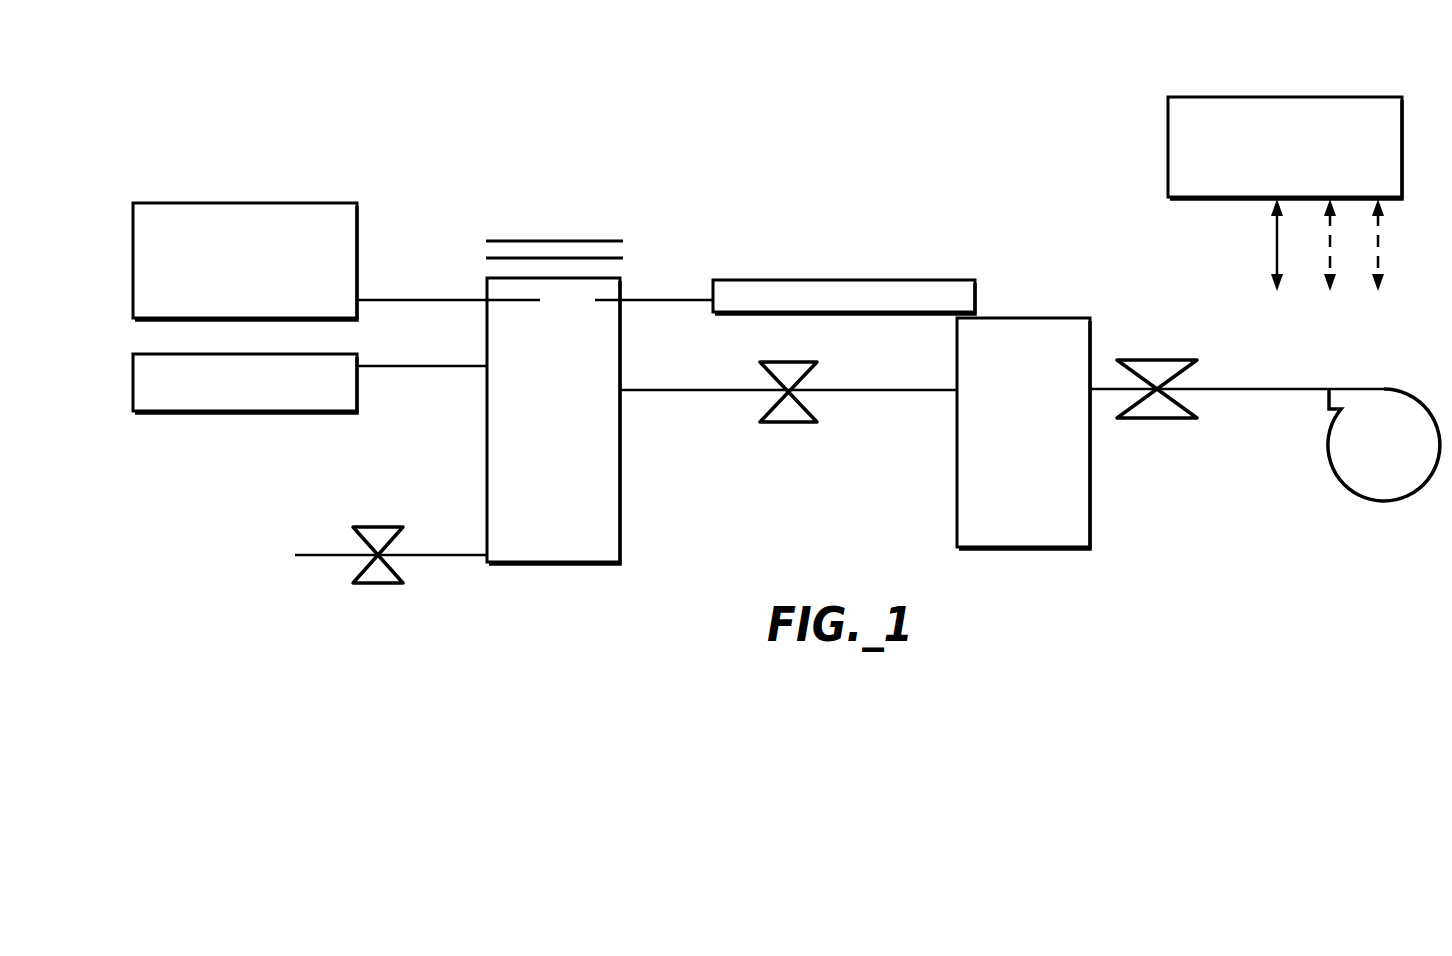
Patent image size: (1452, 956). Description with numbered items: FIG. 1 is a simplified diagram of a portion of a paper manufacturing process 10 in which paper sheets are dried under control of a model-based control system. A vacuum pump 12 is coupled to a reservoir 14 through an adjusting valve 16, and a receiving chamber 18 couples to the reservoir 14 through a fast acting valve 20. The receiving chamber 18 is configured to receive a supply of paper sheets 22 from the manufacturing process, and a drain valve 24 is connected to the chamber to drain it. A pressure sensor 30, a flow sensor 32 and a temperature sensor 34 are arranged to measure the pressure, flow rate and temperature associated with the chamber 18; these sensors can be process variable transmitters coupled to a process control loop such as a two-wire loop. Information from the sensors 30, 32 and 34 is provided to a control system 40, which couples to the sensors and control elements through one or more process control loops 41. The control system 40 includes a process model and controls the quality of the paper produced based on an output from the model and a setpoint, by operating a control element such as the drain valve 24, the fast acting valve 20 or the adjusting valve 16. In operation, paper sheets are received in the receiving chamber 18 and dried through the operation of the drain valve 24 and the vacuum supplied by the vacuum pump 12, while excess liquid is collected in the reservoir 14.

The paper sheet forming system 10 is at (236, 138).
The vacuum pump 12 is at (1329, 447).
The reservoir 14 is at (1092, 487).
The adjusting valve 16 is at (1150, 420).
The receiving chamber 18 is at (531, 485).
The fast acting valve 20 is at (790, 360).
The paper sheets 22 is at (484, 232).
The drain valve 24 is at (378, 527).
The pressure sensor 30 is at (850, 278).
The flow sensor 32 is at (236, 203).
The temperature sensor 34 is at (236, 413).
The control system 40 is at (1285, 97).
The process control loops 41 is at (1258, 295).